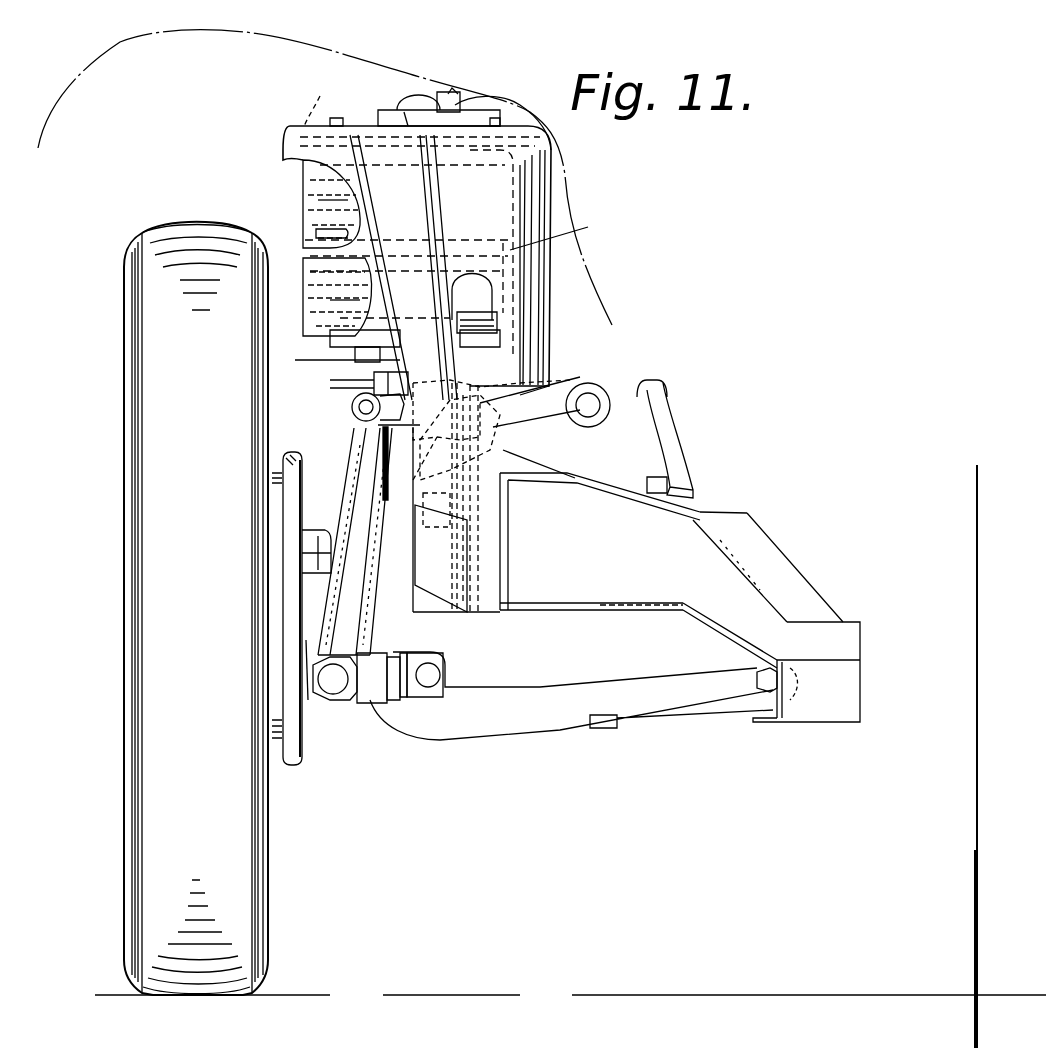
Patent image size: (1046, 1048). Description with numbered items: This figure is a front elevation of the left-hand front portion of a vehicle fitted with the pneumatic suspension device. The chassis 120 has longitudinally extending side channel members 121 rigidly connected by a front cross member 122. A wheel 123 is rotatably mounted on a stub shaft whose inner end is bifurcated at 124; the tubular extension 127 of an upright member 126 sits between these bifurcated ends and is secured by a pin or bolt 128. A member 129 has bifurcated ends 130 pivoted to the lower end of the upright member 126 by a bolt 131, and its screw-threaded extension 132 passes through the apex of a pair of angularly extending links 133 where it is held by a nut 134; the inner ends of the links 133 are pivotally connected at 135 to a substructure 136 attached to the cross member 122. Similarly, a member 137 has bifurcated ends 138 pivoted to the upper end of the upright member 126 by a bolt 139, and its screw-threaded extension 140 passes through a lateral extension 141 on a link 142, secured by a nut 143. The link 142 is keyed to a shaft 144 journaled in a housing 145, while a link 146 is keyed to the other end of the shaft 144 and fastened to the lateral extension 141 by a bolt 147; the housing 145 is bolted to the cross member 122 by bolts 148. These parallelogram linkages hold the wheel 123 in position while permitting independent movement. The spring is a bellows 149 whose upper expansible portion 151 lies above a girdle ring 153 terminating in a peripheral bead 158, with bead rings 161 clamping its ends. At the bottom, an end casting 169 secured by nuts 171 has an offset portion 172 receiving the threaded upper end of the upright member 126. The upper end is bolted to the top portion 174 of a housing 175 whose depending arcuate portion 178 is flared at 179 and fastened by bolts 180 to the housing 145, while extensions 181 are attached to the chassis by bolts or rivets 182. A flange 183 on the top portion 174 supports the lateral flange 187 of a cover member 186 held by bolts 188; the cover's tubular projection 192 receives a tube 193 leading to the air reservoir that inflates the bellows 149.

The chassis 120 is at (686, 612).
The side channel members 121 is at (500, 612).
The front cross member 122 is at (778, 562).
The wheel 123 is at (260, 908).
The bifurcated ends 124 is at (302, 530).
The upright member 126 is at (358, 548).
The tubular extension 127 is at (312, 700).
The pin or bolt 128 is at (314, 532).
The member 129 is at (393, 702).
The bifurcated ends 130 is at (372, 705).
The bolt 131 is at (332, 700).
The screw-threaded extension 132 is at (316, 304).
The links 133 is at (645, 725).
The nut 134 is at (416, 655).
The pivotal connection 135 is at (782, 720).
The substructure 136 is at (830, 725).
The member 137 is at (397, 463).
The bifurcated ends 138 is at (378, 426).
The bolt 139 is at (352, 398).
The screw-threaded extension 140 is at (491, 417).
The lateral extension 141 is at (397, 519).
The link 142 is at (470, 455).
The nut 143 is at (416, 507).
The shaft 144 is at (600, 390).
The housing 145 is at (690, 445).
The link 146 is at (478, 440).
The bolt 147 is at (374, 380).
The bolts 148 is at (667, 485).
The bellows 149 is at (318, 206).
The expansible and contractible portion 151 is at (303, 175).
The girdle ring 153 is at (320, 252).
The peripheral bead 158 is at (316, 234).
The bead rings 161 is at (338, 117).
The end casting 169 is at (355, 352).
The nuts 171 is at (333, 360).
The offset portion 172 is at (330, 380).
The top portion 174 is at (320, 96).
The housing 175 is at (551, 168).
The depending arcuate portion 178 is at (563, 233).
The flared portion 179 is at (545, 376).
The bolts 180 is at (560, 375).
The extensions 181 is at (415, 582).
The bolts or rivets 182 is at (458, 614).
The flange 183 is at (420, 105).
The cover member 186 is at (450, 92).
The lateral flange 187 is at (380, 112).
The bolts 188 is at (404, 112).
The tubular projection 192 is at (456, 92).
The tube 193 is at (503, 99).